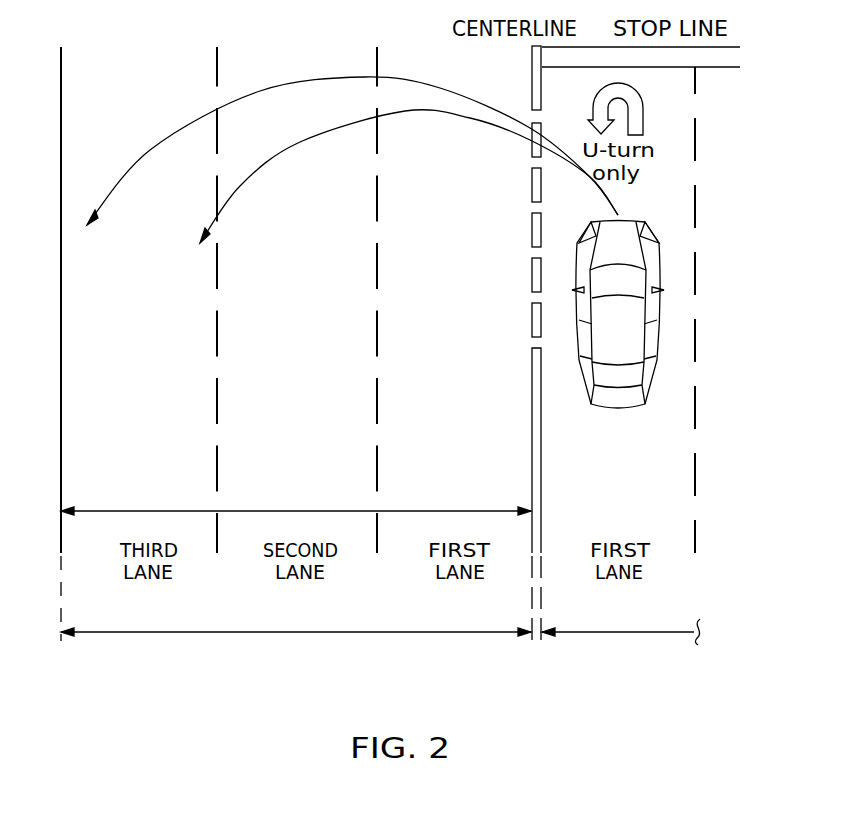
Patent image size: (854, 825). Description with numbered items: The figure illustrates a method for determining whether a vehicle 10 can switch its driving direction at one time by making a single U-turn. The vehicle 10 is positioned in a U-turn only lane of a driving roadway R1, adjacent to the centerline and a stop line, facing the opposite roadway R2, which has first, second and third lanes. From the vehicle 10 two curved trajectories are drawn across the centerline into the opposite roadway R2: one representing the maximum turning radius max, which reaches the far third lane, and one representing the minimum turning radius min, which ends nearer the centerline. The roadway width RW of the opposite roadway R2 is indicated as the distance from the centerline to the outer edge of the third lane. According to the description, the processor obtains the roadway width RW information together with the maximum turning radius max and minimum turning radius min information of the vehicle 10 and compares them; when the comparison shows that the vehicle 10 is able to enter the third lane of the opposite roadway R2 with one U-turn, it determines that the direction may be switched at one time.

The vehicle 10 is at (618, 411).
The maximum turning radius max is at (343, 164).
The minimum turning radius min is at (396, 192).
The roadway width RW is at (296, 498).
The opposite roadway R2 is at (296, 645).
The driving roadway R1 is at (621, 641).